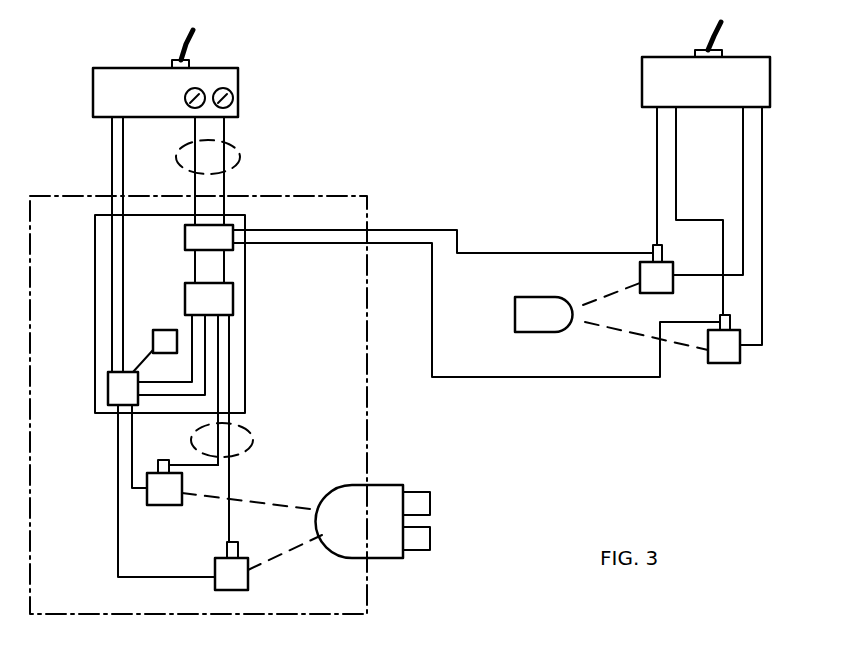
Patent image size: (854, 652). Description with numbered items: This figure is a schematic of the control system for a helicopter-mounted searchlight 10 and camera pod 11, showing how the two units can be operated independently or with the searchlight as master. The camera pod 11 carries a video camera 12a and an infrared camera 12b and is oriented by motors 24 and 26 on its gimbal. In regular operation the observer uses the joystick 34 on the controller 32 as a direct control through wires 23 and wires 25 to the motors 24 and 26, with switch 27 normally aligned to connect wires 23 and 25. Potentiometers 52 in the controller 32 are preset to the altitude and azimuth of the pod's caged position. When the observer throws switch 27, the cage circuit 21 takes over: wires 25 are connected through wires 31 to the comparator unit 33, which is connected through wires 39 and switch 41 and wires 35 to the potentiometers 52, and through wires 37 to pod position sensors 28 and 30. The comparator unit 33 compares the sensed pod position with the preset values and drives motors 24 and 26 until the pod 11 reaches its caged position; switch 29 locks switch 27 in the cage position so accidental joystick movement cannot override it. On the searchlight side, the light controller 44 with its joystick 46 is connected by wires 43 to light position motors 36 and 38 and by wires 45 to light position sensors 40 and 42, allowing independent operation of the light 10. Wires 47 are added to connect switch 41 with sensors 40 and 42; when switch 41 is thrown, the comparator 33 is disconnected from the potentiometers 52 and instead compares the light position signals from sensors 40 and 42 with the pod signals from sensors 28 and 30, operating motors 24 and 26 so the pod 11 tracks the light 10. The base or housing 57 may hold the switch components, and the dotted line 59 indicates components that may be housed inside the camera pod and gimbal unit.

The searchlight 10 is at (515, 318).
The camera pod 11 is at (383, 485).
The video camera 12a is at (430, 496).
The infrared camera 12b is at (430, 545).
The cage circuit 21 is at (239, 155).
The wires 23 is at (123, 290).
The motor 24 is at (168, 505).
The wires 25 is at (132, 453).
The motor 26 is at (248, 582).
The switch 27 is at (108, 397).
The sensor 28 is at (160, 460).
The switch 29 is at (160, 330).
The sensor 30 is at (229, 542).
The wires 31 is at (192, 352).
The controller 32 is at (239, 90).
The comparator unit 33 is at (234, 297).
The joystick 34 is at (172, 46).
The wires 35 is at (195, 190).
The light position motor 36 is at (724, 363).
The wires 37 is at (230, 461).
The light position motor 38 is at (640, 276).
The wires 39 is at (221, 258).
The light position sensor 40 is at (722, 318).
The switch 41 is at (185, 237).
The light position sensor 42 is at (653, 250).
The wires 43 is at (743, 158).
The light controller 44 is at (642, 89).
The wires 45 is at (676, 160).
The joystick 46 is at (722, 30).
The wires 47 is at (433, 248).
The potentiometers 52 is at (198, 90).
The base or housing 57 is at (246, 380).
The dotted line 59 is at (367, 412).